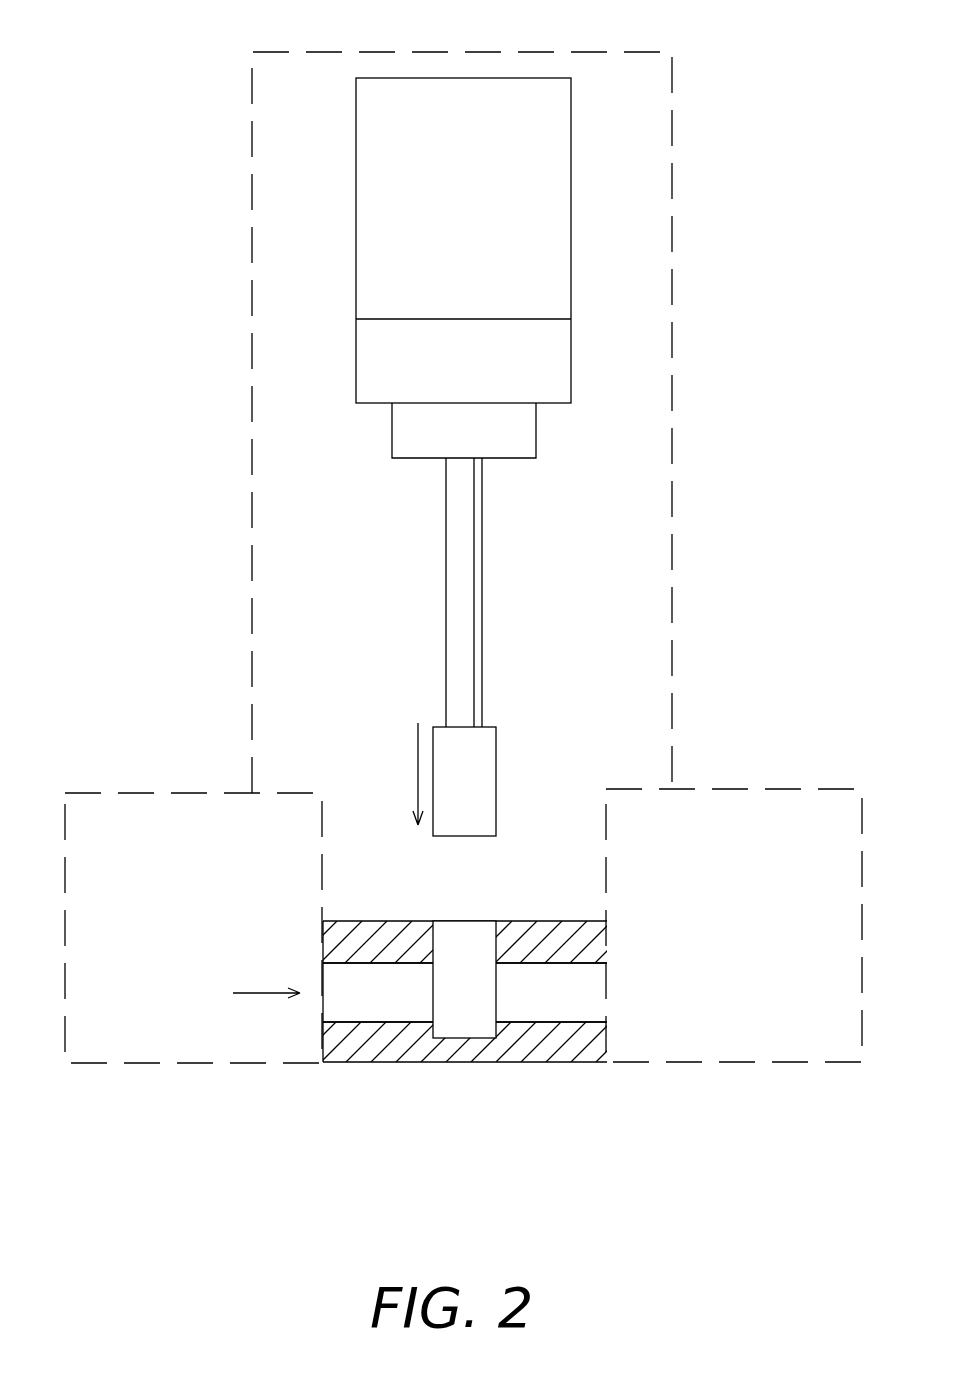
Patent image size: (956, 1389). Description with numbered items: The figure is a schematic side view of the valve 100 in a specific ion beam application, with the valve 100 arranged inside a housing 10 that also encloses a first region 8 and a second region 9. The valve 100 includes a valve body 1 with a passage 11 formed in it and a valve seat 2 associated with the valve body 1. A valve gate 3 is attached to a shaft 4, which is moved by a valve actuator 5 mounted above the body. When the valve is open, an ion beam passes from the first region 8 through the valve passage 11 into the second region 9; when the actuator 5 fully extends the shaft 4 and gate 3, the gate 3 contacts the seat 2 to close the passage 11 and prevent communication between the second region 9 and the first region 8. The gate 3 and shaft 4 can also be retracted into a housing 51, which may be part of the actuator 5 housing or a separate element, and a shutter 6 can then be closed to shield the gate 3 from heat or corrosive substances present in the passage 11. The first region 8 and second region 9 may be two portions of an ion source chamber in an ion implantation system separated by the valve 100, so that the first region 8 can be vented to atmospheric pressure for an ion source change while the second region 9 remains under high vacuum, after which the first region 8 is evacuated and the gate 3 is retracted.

The valve 100 is at (237, 78).
The housing 10 is at (672, 630).
The valve actuator 5 is at (356, 168).
The housing 51 is at (571, 345).
The shutter 6 is at (536, 430).
The shaft 4 is at (482, 567).
The valve gate 3 is at (496, 750).
The first region 8 is at (152, 792).
The second region 9 is at (743, 787).
The valve body 1 is at (560, 1063).
The passage 11 is at (568, 963).
The valve seat 2 is at (493, 945).